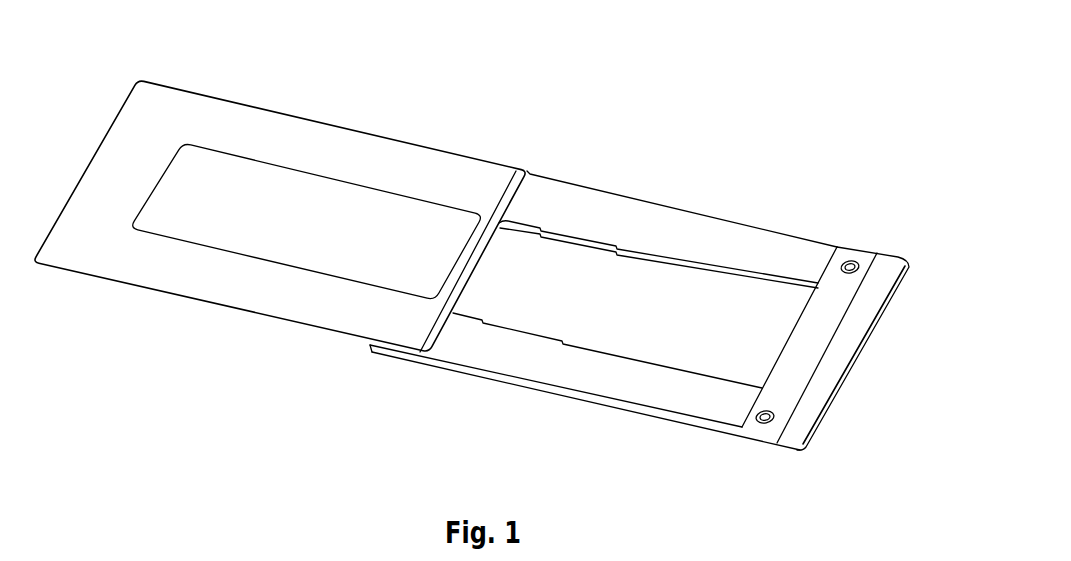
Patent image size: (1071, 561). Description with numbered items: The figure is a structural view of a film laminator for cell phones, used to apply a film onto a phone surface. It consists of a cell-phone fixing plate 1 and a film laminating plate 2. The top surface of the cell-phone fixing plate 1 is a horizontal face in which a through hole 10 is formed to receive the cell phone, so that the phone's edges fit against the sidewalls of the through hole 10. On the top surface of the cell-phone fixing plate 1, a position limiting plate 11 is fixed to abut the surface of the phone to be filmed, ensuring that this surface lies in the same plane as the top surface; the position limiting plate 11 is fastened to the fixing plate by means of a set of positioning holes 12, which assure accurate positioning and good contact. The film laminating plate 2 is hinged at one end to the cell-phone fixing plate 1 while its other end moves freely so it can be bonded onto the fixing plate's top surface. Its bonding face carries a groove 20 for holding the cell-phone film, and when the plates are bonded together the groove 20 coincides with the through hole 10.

The cell-phone fixing plate 1 is at (672, 225).
The film laminating plate 2 is at (179, 123).
The through hole 10 is at (620, 305).
The position limiting plate 11 is at (807, 360).
The positioning holes 12 is at (853, 262).
The groove 20 is at (298, 225).